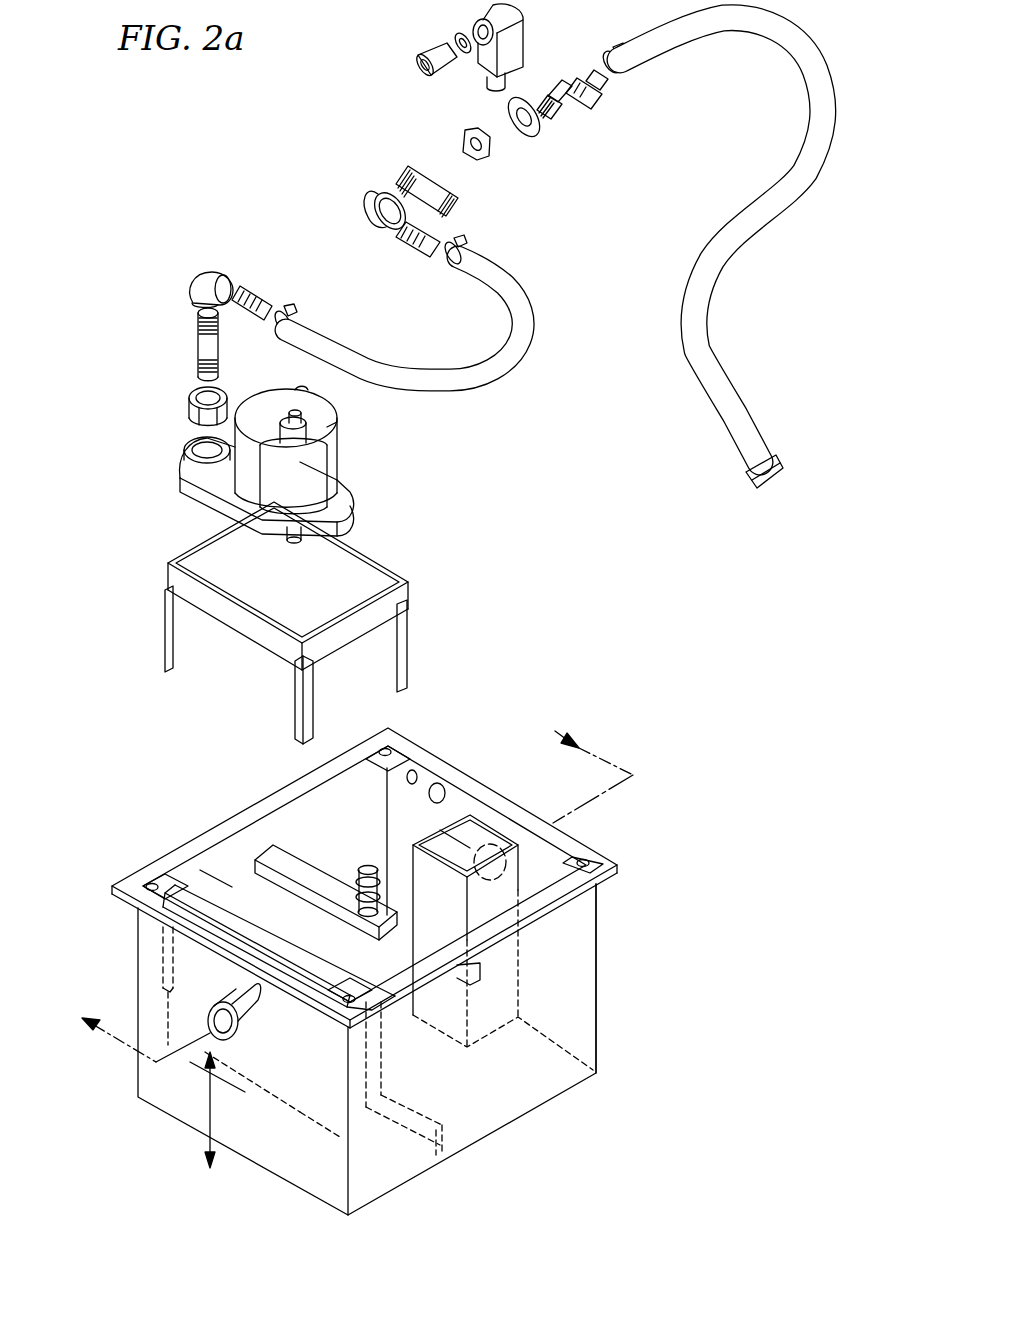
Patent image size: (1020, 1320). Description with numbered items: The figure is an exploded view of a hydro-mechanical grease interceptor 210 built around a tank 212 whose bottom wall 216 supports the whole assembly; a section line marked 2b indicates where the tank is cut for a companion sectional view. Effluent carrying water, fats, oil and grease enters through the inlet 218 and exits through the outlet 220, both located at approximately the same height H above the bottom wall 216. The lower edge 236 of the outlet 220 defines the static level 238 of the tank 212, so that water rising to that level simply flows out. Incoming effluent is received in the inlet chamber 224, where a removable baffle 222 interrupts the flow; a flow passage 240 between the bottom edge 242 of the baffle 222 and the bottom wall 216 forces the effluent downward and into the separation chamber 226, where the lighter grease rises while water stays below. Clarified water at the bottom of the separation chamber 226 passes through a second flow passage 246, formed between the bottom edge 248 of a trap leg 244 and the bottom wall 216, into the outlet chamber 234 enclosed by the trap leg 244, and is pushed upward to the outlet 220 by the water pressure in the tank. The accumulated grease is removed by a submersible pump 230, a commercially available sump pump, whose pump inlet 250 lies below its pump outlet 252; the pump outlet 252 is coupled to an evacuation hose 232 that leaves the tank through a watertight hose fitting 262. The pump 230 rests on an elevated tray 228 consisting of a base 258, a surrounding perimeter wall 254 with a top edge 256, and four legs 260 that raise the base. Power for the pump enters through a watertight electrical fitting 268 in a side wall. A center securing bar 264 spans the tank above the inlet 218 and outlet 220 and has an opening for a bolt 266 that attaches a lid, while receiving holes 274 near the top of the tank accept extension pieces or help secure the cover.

The grease interceptor 210 is at (695, 887).
The tank 212 is at (188, 878).
The bottom wall 216 is at (412, 1185).
The inlet 218 is at (210, 1034).
The outlet 220 is at (483, 858).
The baffle 222 is at (293, 1073).
The inlet chamber 224 is at (140, 975).
The separation chamber 226 is at (185, 855).
The elevated tray 228 is at (270, 613).
The submersible pump 230 is at (208, 472).
The evacuation hose 232 is at (486, 378).
The outlet chamber 234 is at (461, 822).
The lower edge 236 is at (497, 882).
The static level 238 is at (366, 864).
The flow passage 240 is at (293, 1078).
The bottom edge 242 is at (330, 1140).
The trap leg 244 is at (460, 1027).
The flow passage 246 is at (512, 1034).
The bottom edge 248 is at (427, 1024).
The pump inlet 250 is at (178, 512).
The pump outlet 252 is at (193, 440).
The perimeter wall 254 is at (351, 567).
The top edge 256 is at (385, 592).
The base 258 is at (302, 572).
The legs 260 is at (166, 650).
The watertight hose fitting 262 is at (430, 782).
The center securing bar 264 is at (210, 858).
The bolt 266 is at (268, 853).
The watertight electrical fitting 268 is at (408, 770).
The receiving holes 274 is at (152, 882).
The section line 2b is at (340, 885).
The height H is at (210, 1110).